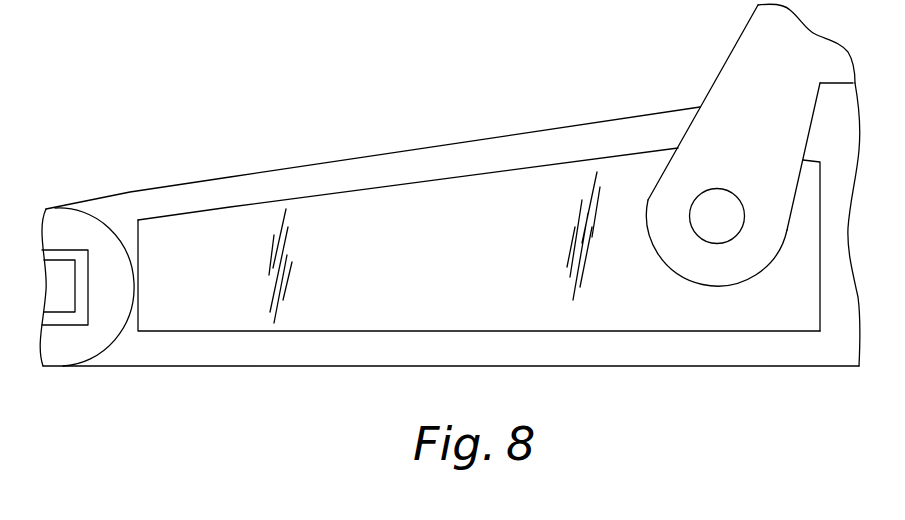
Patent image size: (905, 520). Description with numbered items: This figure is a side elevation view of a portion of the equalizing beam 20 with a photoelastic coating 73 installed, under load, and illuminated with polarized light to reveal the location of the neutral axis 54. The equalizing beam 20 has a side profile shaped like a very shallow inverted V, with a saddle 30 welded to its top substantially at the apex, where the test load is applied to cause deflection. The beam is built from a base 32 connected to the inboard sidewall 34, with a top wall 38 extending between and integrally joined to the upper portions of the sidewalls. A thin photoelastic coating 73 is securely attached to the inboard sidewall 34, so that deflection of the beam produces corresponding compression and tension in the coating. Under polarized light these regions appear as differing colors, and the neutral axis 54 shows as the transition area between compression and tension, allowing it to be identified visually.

The equalizing beam 20 is at (450, 224).
The saddle 30 is at (743, 83).
The base 32 is at (590, 358).
The inboard sidewall 34 is at (347, 178).
The top wall 38 is at (527, 132).
The neutral axis 54 is at (445, 223).
The photoelastic coating 73 is at (208, 237).